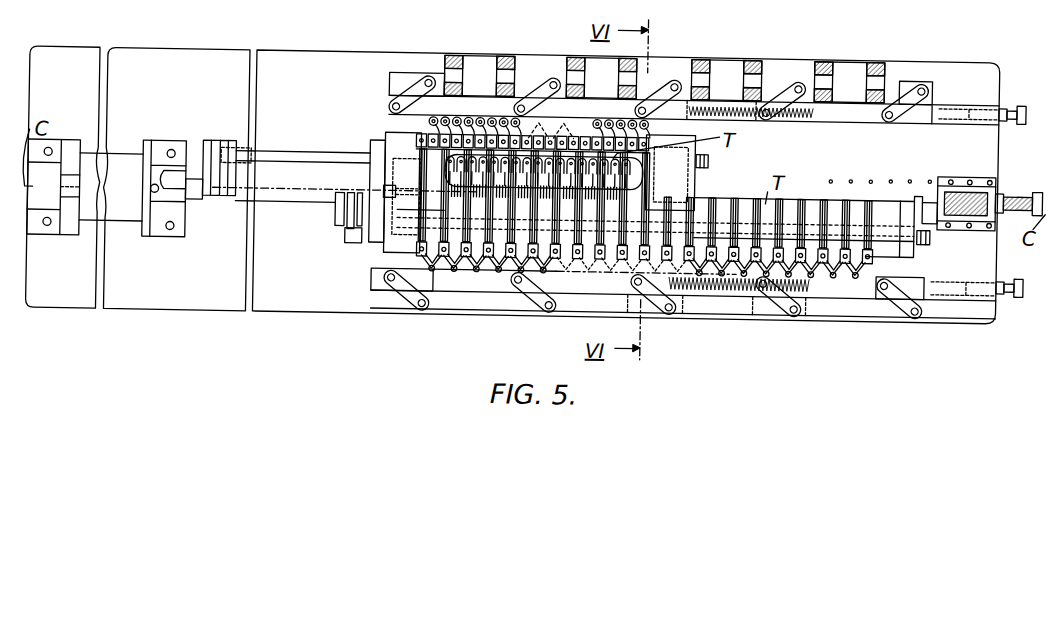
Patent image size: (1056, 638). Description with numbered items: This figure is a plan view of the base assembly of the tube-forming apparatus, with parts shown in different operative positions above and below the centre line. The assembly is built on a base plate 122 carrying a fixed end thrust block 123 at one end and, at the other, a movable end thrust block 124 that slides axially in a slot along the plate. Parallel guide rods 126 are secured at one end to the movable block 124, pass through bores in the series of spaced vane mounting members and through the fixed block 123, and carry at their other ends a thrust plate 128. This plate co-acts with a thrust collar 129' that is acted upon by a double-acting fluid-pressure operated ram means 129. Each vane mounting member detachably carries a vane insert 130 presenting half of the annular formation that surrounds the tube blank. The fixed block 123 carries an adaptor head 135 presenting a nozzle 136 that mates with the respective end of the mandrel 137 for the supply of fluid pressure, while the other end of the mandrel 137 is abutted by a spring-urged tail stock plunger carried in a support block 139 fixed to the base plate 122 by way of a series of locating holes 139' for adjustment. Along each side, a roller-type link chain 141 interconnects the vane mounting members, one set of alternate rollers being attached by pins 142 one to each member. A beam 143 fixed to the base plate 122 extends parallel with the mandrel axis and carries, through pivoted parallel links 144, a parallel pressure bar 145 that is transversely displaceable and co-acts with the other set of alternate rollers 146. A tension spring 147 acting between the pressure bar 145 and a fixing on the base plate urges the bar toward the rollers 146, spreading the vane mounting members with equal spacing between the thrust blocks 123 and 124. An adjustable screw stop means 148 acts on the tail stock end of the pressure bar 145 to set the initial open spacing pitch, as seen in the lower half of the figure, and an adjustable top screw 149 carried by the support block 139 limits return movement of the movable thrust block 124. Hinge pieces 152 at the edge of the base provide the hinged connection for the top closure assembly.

The base plate 122 is at (314, 299).
The fixed end thrust block 123 is at (390, 238).
The movable end thrust block 124 is at (910, 242).
The guide rods 126 is at (280, 154).
The thrust plate 128 is at (220, 139).
The double-acting fluid-pressure operated ram means 129 is at (188, 157).
The thrust collar 129' is at (275, 174).
The vane insert 130 is at (509, 269).
The adaptor head 135 is at (379, 151).
The nozzle 136 is at (394, 188).
The mandrel 137 is at (702, 179).
The support block 139 is at (993, 182).
The locating holes 139' is at (901, 158).
The roller-type link chain 141 is at (428, 127).
The pins 142 is at (853, 243).
The beam 143 is at (778, 78).
The pivoted parallel links 144 is at (543, 72).
The pressure bar 145 is at (909, 72).
The alternate rollers 146 is at (464, 273).
The tension spring 147 is at (734, 100).
The adjustable screw stop means 148 is at (941, 105).
The adjustable top screw 149 is at (1015, 180).
The hinge piece 152 is at (827, 57).